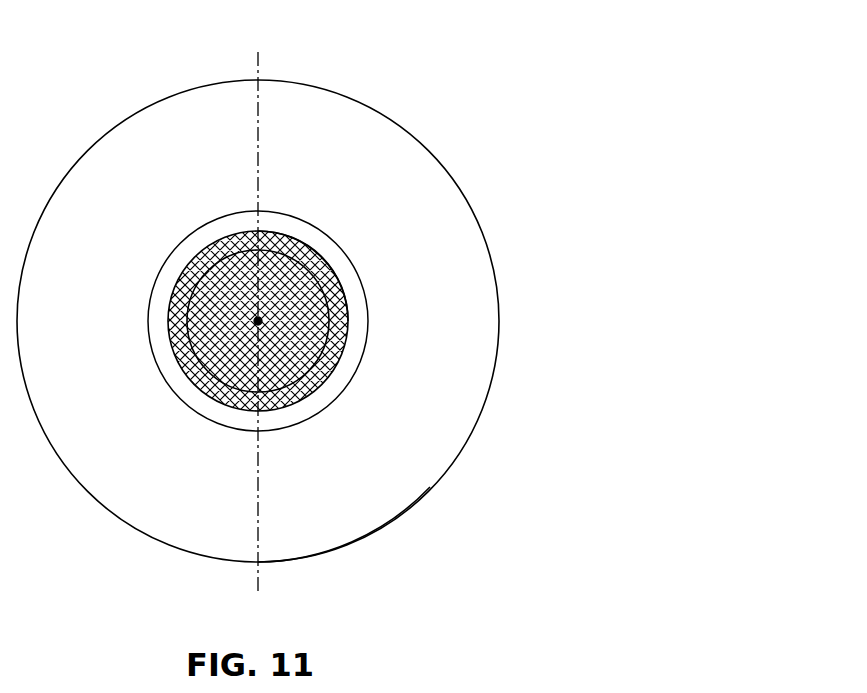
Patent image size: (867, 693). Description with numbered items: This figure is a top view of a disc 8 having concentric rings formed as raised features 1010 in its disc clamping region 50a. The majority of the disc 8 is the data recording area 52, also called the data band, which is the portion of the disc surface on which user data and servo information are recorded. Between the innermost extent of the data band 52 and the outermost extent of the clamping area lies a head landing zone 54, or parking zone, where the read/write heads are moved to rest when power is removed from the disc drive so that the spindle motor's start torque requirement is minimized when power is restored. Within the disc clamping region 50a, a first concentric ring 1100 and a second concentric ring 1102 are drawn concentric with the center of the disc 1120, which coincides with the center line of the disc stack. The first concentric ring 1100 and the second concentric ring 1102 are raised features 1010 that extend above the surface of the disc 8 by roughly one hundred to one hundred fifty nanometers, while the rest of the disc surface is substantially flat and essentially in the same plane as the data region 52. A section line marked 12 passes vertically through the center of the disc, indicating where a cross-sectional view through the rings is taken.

The disc 8 is at (425, 478).
The data recording area 52 is at (478, 244).
The head landing zone 54 is at (323, 400).
The disc clamping region 50a is at (343, 348).
The raised features 1010 is at (190, 265).
The first concentric ring 1100 is at (293, 238).
The second concentric ring 1102 is at (320, 258).
The center of the disc 1120 is at (257, 321).
The section line 12- 12 is at (258, 50).